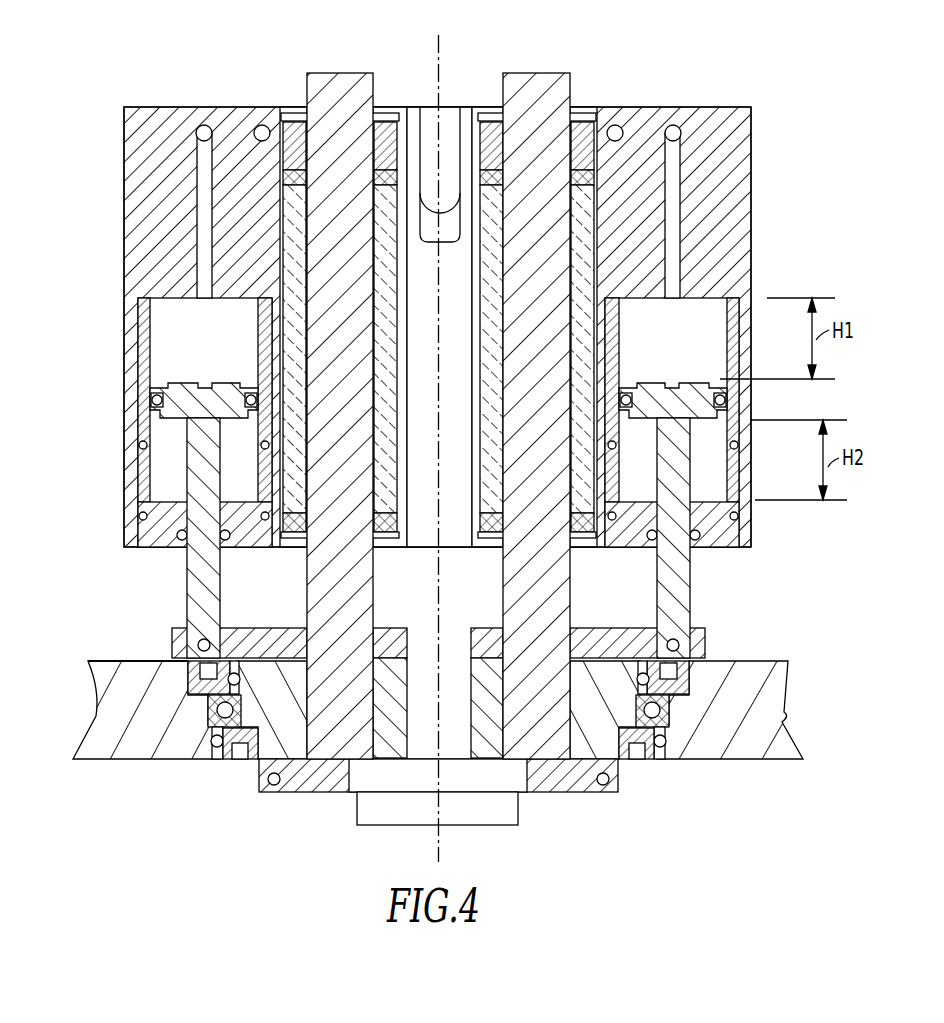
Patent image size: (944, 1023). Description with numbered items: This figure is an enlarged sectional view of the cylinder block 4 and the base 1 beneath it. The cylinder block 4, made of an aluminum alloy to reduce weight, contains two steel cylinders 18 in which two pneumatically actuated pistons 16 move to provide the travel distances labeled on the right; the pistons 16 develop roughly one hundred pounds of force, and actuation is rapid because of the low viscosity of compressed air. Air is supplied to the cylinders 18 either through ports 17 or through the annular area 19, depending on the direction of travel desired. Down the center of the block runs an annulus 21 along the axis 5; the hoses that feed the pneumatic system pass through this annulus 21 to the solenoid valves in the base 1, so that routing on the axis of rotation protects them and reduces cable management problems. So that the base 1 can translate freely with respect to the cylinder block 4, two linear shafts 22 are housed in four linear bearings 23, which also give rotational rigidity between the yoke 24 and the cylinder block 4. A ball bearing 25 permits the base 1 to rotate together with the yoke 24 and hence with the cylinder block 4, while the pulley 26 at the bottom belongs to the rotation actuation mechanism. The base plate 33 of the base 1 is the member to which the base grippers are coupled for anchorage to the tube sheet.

The base 1 is at (136, 762).
The cylinder block 4 is at (124, 128).
The axis 5 is at (438, 46).
The pistons 16 is at (187, 581).
The ports 17 is at (207, 204).
The cylinders 18 is at (150, 341).
The annular area 19 is at (136, 470).
The annulus 21 is at (445, 110).
The linear shafts 22 is at (334, 73).
The linear bearings 23 is at (290, 208).
The yoke 24 is at (270, 768).
The ball bearing 25 is at (668, 727).
The pulley 26 is at (560, 795).
The base plate 33 is at (88, 672).